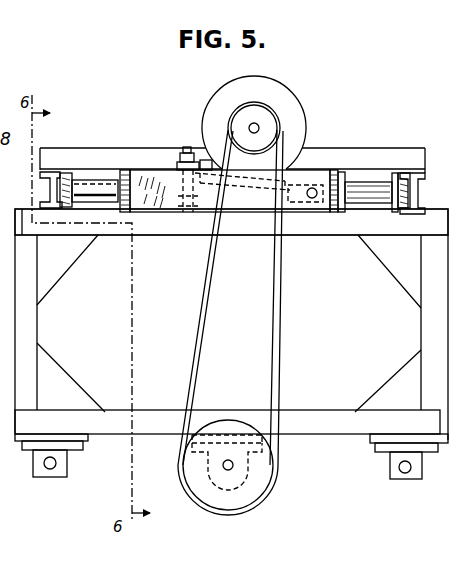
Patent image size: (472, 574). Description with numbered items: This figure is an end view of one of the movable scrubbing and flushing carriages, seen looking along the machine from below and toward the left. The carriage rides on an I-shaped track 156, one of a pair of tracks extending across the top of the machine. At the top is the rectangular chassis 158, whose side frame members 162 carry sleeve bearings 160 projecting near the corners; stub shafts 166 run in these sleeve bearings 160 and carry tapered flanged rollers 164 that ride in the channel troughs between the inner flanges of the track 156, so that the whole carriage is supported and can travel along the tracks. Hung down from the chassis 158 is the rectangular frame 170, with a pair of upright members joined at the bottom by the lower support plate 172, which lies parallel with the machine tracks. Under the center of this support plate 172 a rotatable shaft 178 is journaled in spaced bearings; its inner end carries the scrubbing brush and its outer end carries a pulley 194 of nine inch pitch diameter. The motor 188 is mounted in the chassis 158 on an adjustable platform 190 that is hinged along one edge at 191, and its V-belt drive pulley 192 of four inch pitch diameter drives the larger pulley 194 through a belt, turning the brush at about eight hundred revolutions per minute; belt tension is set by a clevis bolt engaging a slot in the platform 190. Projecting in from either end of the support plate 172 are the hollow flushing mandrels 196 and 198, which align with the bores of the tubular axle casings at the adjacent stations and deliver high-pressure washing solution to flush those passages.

The I-shaped track 156 is at (416, 192).
The rectangular chassis 158 is at (297, 216).
The sleeve bearing 160 is at (88, 182).
The side frame member 162 is at (127, 172).
The tapered flanged roller 164 is at (410, 173).
The stub shaft 166 is at (110, 236).
The rectangular frame 170 is at (419, 326).
The lower support plate 172 is at (296, 440).
The rotatable shaft 178 is at (233, 467).
The motor 188 is at (289, 93).
The adjustable platform 190 is at (233, 179).
The hinge 191 is at (316, 200).
The V-belt drive pulley 192 is at (269, 125).
The pulley 194 is at (222, 500).
The hollow flushing mandrel 196 is at (50, 477).
The hollow flushing mandrel 198 is at (404, 480).